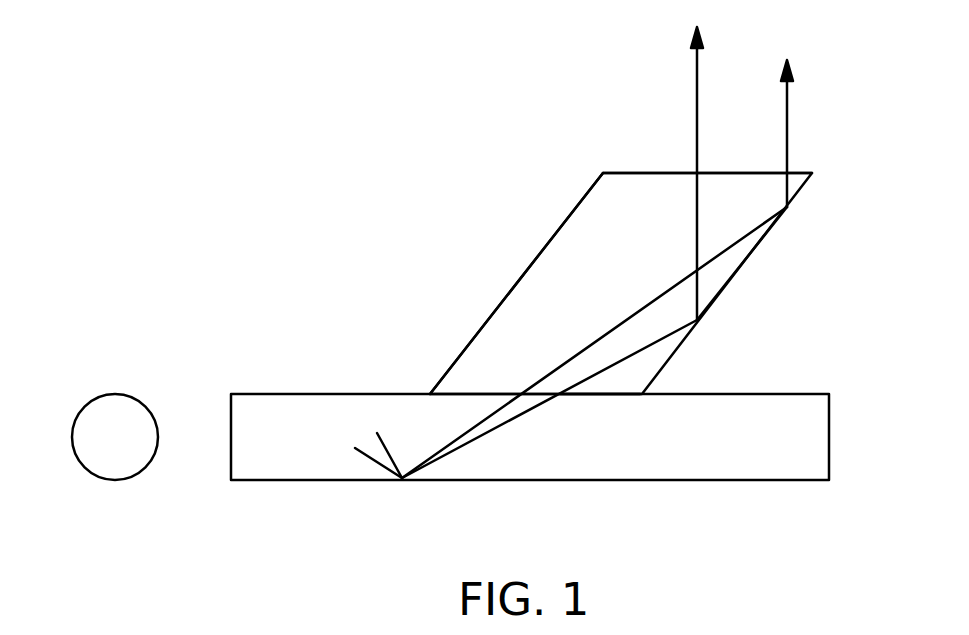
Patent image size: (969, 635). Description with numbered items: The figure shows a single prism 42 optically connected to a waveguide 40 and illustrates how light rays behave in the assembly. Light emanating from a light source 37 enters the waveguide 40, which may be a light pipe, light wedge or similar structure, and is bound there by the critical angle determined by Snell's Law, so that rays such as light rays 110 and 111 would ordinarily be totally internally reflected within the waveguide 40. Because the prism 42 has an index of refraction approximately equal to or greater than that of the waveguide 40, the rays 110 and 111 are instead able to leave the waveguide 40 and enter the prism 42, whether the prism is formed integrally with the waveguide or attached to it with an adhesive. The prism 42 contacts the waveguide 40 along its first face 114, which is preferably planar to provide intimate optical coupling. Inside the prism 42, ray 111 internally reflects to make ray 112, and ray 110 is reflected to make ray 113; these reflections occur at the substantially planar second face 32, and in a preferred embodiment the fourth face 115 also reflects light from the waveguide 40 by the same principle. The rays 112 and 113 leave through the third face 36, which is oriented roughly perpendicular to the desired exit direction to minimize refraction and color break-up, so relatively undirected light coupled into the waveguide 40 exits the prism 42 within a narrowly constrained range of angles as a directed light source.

The second face 32 is at (747, 265).
The third face 36 is at (619, 173).
The light source 37 is at (95, 395).
The waveguide 40 is at (785, 481).
The prism 42 is at (575, 240).
The light ray 110 is at (553, 372).
The light ray 111 is at (495, 435).
The ray 112 is at (697, 103).
The ray 113 is at (788, 120).
The first face 114 is at (590, 395).
The fourth face 115 is at (518, 280).